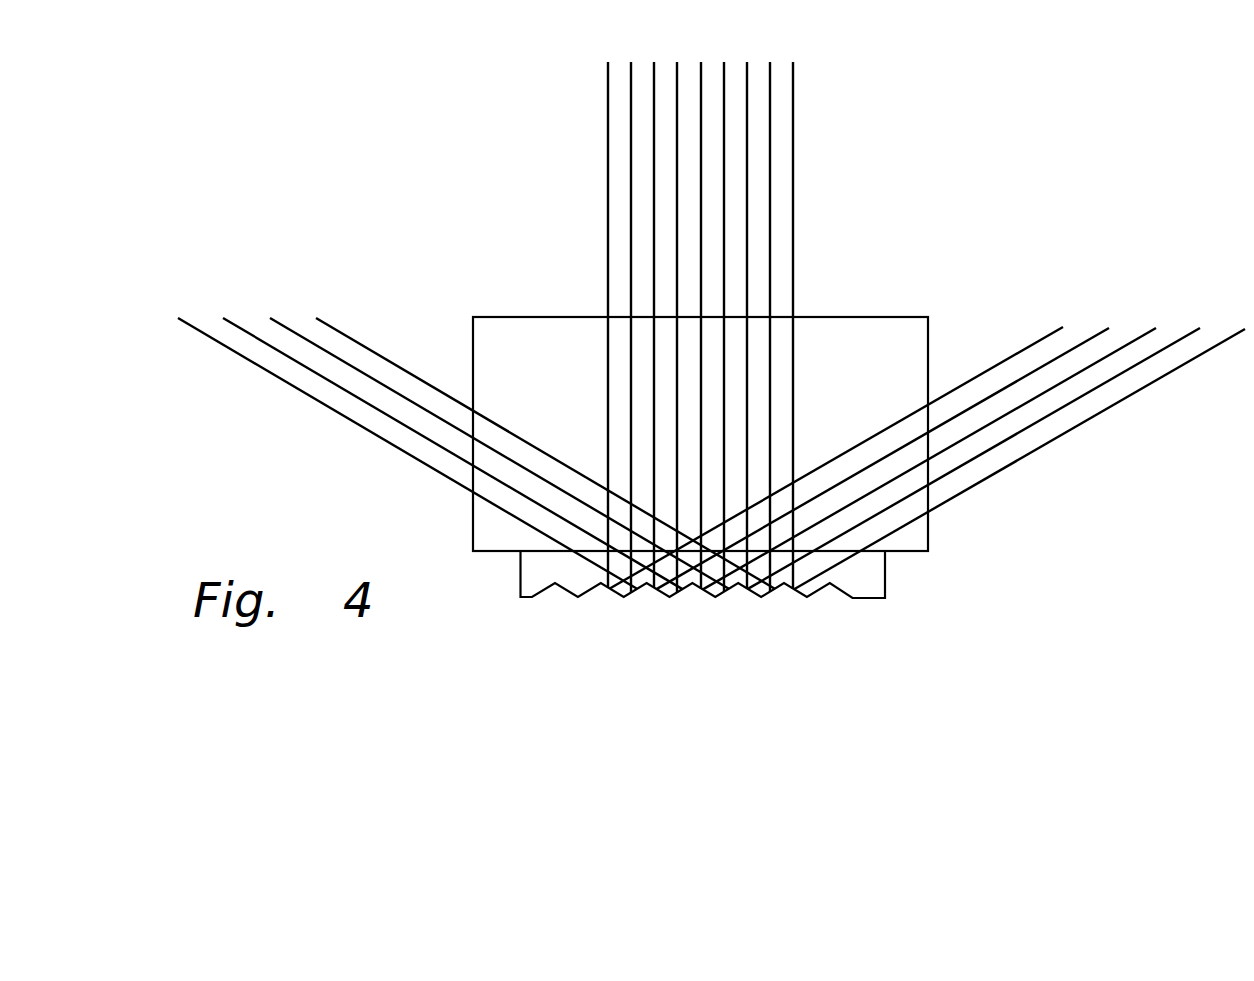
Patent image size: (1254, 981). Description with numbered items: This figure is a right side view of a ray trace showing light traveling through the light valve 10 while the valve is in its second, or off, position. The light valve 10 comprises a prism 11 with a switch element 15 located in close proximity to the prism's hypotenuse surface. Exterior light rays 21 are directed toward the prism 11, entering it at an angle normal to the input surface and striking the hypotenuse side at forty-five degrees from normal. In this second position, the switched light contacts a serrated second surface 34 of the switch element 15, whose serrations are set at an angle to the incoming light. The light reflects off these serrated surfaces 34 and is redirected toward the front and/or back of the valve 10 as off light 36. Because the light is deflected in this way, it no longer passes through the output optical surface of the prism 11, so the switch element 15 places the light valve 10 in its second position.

The light valve 10 is at (450, 280).
The prism 11 is at (550, 333).
The switch element 15 is at (568, 574).
The exterior light rays 21 is at (750, 267).
The serrated second surface 34 is at (817, 590).
The off light 36 is at (1023, 407).